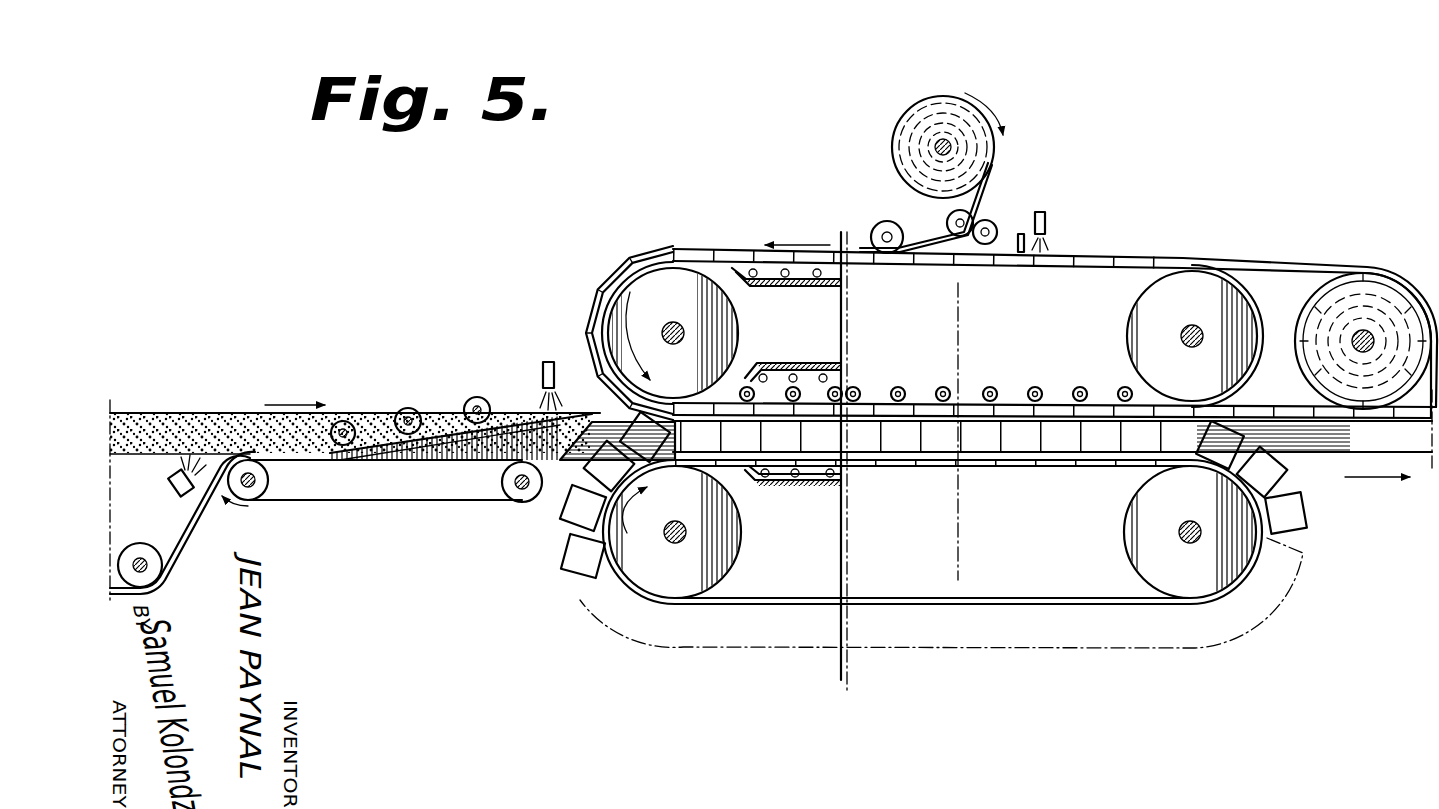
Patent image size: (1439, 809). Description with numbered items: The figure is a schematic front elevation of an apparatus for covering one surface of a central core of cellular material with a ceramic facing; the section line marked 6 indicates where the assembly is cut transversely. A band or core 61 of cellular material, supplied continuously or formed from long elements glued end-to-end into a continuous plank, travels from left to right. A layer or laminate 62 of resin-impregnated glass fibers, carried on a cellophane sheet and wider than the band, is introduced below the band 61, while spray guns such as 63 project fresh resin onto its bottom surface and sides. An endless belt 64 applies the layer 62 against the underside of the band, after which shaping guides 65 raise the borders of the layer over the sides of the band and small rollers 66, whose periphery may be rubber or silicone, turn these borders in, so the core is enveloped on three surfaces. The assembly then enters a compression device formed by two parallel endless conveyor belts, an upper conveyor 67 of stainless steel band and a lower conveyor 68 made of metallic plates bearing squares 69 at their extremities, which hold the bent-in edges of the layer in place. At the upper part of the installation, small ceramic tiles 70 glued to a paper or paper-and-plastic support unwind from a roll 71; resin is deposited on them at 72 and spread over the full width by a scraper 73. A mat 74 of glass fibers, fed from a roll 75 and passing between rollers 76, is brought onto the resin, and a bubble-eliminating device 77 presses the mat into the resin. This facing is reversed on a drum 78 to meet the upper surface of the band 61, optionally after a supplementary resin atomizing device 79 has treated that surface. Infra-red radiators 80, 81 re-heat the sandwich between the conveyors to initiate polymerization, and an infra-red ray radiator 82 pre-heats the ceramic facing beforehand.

The section line 6- 6 is at (930, 431).
The band or core of cellular material 61 is at (355, 411).
The layer or laminate of glass fibers 62 is at (189, 523).
The spray gun 63 is at (162, 476).
The endless belt 64 is at (395, 504).
The shaping guides 65 is at (502, 455).
The small rollers 66 is at (410, 406).
The upper conveyor belt 67 is at (936, 372).
The lower conveyor belt 68 is at (941, 554).
The squares 69 is at (902, 495).
The small tiles 70 is at (1011, 341).
The roll 71 is at (1363, 314).
The resin deposit point 72 is at (1069, 220).
The scraper 73 is at (1015, 270).
The mat of glass fibers 74 is at (953, 194).
The roll 75 is at (947, 119).
The rollers 76 is at (992, 215).
The bubble-eliminating device 77 is at (865, 213).
The drum 78 is at (650, 324).
The supplementary resin atomizing device 79 is at (537, 363).
The infra-red radiator 80 is at (792, 358).
The infra-red radiator 81 is at (792, 502).
The infra-red ray radiator 82 is at (786, 293).